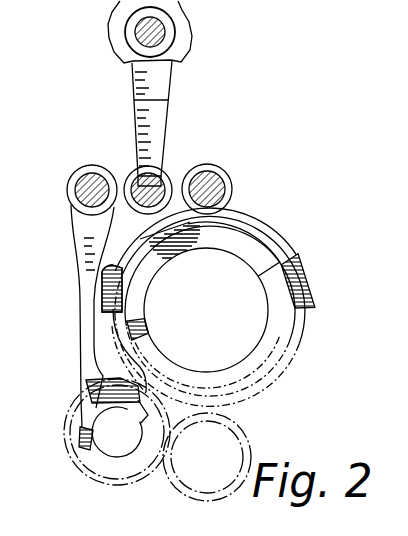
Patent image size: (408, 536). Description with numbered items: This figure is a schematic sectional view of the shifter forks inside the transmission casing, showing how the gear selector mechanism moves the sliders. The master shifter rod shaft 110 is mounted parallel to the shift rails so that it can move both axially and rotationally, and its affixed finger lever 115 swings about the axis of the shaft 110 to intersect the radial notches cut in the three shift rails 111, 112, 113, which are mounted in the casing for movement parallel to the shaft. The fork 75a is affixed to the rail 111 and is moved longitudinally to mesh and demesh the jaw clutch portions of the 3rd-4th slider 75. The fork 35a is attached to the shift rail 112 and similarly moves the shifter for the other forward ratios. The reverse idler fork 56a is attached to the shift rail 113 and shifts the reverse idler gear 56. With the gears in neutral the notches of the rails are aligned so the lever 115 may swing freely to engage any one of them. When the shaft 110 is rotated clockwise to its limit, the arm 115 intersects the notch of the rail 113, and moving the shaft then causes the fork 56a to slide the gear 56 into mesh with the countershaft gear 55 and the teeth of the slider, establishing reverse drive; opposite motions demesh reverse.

The master shifter rod shaft 110 is at (160, 31).
The finger lever 115 is at (157, 118).
The shift rail 112 is at (167, 176).
The shift rail 113 is at (75, 197).
The shift rail 111 is at (228, 185).
The fork 35a is at (150, 218).
The fork 75a is at (276, 236).
The 3rd-4th slider 75 is at (276, 348).
The reverse idler fork 56a is at (95, 381).
The reverse idler gear 56 is at (63, 445).
The countershaft gear 55 is at (243, 441).